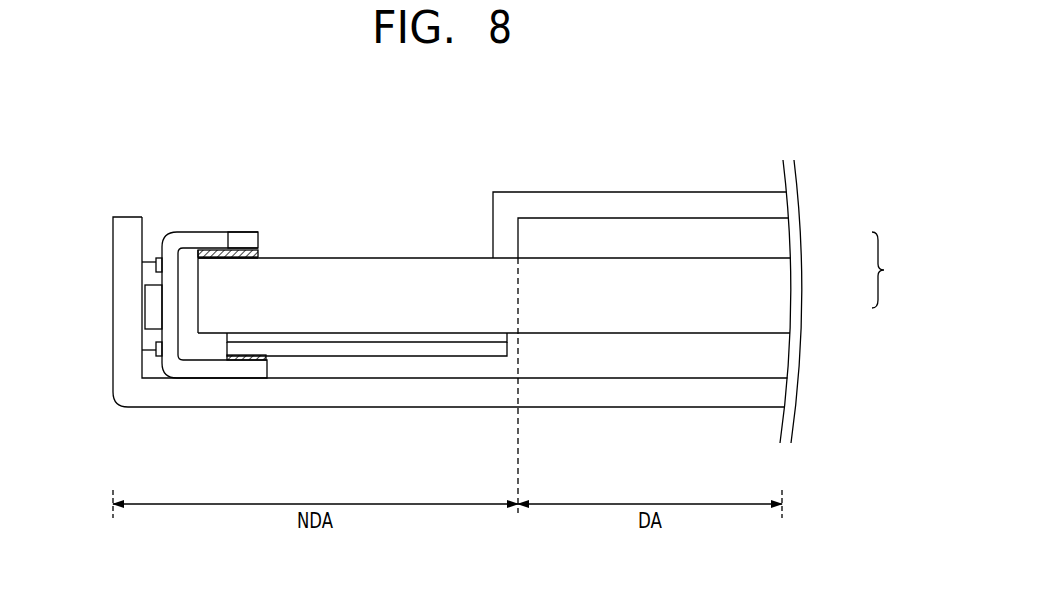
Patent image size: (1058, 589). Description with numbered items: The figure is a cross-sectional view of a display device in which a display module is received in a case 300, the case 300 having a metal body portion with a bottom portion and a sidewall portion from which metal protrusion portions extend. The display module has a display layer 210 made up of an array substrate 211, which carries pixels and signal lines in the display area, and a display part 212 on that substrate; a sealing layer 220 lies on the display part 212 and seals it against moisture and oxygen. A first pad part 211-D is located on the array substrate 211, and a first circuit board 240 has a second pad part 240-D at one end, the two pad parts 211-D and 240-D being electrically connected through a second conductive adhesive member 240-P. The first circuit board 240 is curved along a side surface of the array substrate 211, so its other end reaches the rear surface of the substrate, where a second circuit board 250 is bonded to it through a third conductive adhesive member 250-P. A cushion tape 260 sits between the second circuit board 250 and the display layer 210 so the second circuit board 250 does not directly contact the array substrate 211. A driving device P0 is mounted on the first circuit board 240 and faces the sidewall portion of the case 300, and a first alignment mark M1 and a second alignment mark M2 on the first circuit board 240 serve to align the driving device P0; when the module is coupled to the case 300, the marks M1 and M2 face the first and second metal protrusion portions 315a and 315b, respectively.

The first circuit board 240 is at (192, 240).
The second pad part 240-D is at (230, 240).
The second conductive adhesive member 240-P is at (258, 255).
The first pad part 211-D is at (236, 265).
The first alignment mark M1 is at (156, 262).
The first metal protrusion portion 315a is at (150, 273).
The driving device P0 is at (152, 305).
The second metal protrusion portion 315b is at (150, 343).
The second alignment mark M2 is at (157, 350).
The third conductive adhesive member 250-P is at (270, 359).
The second circuit board 250 is at (353, 348).
The cushion tape 260 is at (420, 340).
The sealing layer 220 is at (770, 205).
The display part 212 is at (770, 240).
The array substrate 211 is at (782, 297).
The display layer 210 is at (896, 270).
The case 300 is at (773, 395).